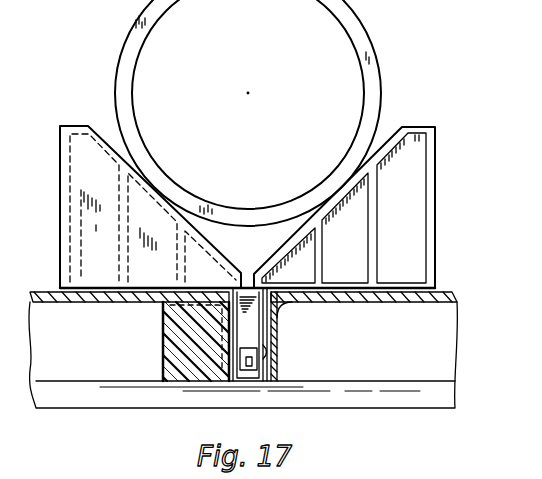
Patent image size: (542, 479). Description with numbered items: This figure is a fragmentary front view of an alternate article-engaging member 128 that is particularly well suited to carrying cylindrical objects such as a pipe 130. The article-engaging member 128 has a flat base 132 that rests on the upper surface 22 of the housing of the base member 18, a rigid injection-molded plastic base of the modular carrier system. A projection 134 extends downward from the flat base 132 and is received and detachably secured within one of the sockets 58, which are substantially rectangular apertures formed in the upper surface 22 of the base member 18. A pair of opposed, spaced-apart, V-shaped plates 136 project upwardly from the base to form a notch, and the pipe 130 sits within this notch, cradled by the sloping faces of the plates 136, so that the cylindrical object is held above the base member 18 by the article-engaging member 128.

The base member 18 is at (41, 293).
The upper surface 22 is at (443, 292).
The socket 58 is at (278, 364).
The article-engaging member 128 is at (381, 207).
The pipe 130 is at (359, 27).
The flat base 132 is at (402, 286).
The projection 134 is at (278, 326).
The V-shaped plates 136 is at (80, 145).